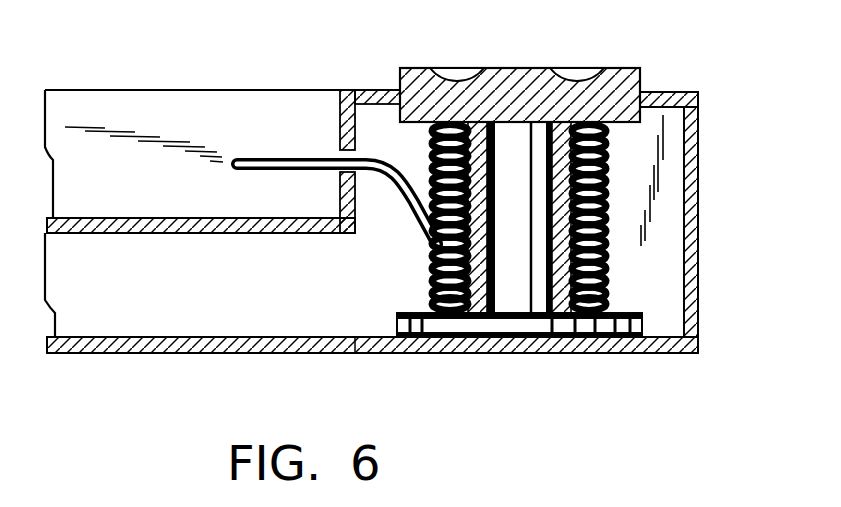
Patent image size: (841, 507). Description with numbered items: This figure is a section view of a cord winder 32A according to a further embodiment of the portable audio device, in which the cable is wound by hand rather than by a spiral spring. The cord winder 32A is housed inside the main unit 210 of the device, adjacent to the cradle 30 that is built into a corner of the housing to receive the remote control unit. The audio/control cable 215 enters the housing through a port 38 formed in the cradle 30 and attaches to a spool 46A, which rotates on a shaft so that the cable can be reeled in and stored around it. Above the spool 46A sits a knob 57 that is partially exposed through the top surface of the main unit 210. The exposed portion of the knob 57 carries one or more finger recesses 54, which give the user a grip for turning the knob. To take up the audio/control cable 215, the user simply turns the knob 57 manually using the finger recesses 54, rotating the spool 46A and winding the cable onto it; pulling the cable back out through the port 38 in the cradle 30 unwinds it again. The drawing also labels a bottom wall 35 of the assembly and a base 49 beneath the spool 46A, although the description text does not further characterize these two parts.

The cradle 30 is at (156, 104).
The bottom wall of housing 35 is at (125, 343).
The main unit 210 is at (340, 356).
The port 38 is at (340, 154).
The audio/control cable 215 is at (257, 157).
The spool 46A is at (511, 78).
The finger recesses 54 is at (462, 79).
The cord winder 32A is at (710, 73).
The knob 57 is at (637, 68).
The bobbin base 49 is at (518, 297).